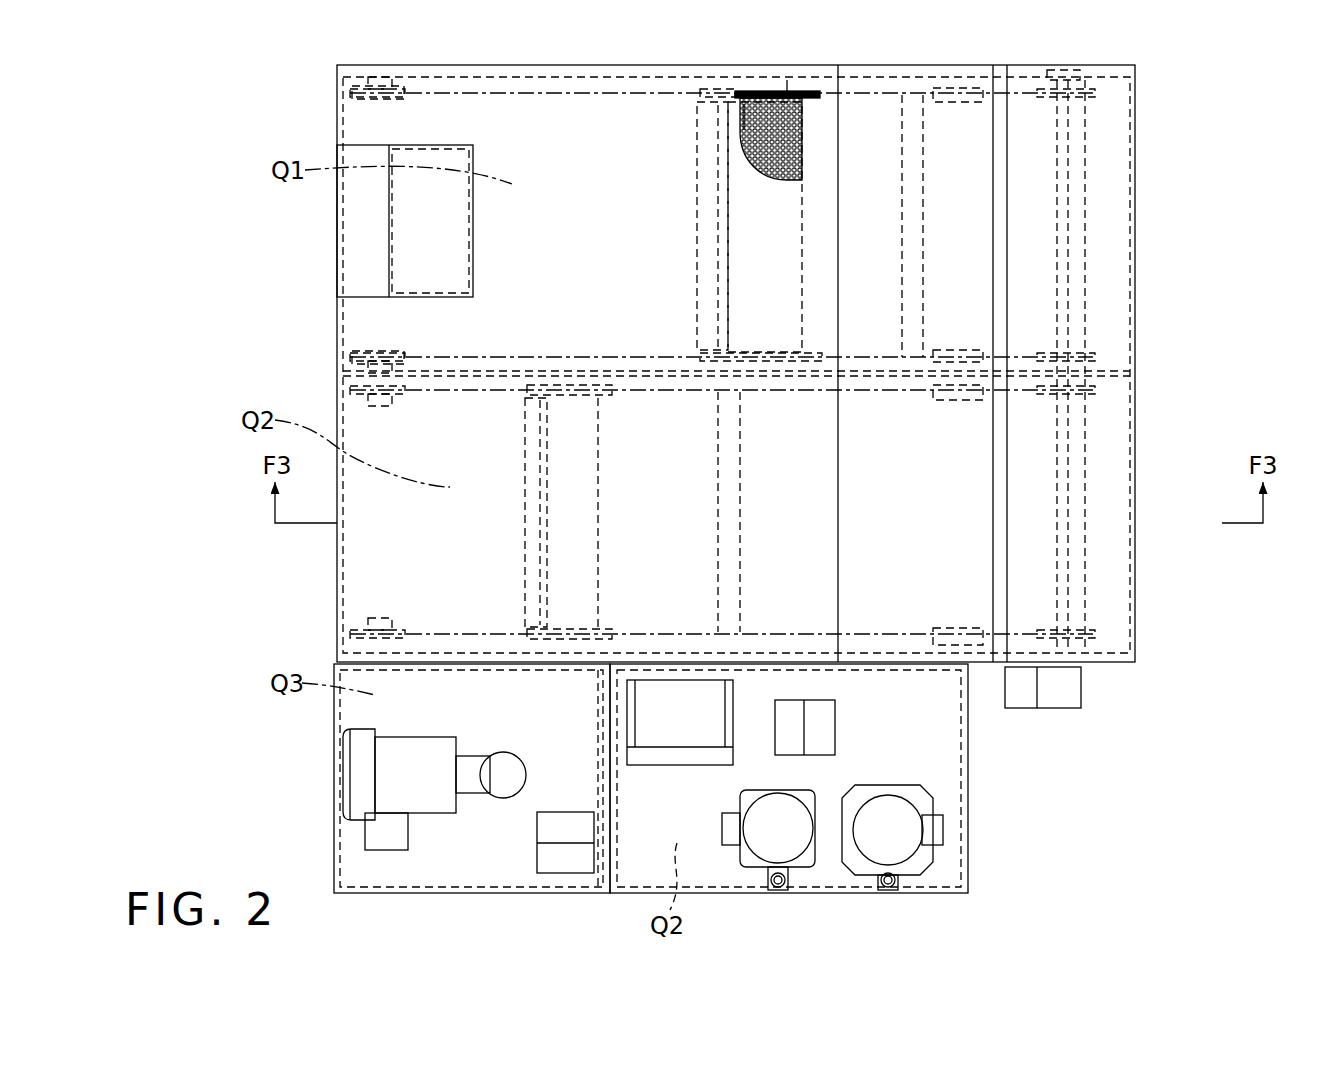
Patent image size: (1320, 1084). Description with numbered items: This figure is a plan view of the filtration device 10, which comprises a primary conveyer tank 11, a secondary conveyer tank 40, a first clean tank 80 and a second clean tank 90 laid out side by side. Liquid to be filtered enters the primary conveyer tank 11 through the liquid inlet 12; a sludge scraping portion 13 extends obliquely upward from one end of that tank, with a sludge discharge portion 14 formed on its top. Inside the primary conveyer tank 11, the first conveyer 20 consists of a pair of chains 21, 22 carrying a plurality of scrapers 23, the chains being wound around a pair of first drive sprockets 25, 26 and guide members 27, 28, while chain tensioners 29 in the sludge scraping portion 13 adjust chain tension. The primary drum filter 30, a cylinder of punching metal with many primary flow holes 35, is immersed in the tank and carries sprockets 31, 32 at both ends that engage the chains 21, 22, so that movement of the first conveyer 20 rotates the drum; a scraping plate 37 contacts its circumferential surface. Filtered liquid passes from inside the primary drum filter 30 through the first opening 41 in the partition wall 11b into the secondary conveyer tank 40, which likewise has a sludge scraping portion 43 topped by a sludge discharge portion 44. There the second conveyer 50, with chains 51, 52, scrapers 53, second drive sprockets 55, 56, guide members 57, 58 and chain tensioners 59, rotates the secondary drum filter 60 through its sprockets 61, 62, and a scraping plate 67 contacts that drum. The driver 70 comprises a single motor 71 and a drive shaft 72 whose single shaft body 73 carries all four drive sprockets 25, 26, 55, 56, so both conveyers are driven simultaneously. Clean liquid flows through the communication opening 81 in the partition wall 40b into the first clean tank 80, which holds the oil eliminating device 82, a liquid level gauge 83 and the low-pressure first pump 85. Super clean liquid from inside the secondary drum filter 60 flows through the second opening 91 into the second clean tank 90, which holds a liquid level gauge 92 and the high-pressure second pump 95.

The filtration device 10 is at (293, 309).
The primary conveyer tank 11 is at (360, 118).
The partition wall 11b is at (718, 392).
The liquid inlet 12 is at (362, 218).
The sludge scraping portion 13 is at (973, 207).
The sludge discharge portion 14 is at (1115, 200).
The first conveyer 20 is at (683, 276).
The chain 21 is at (628, 96).
The chain 22 is at (565, 356).
The scrapers 23 is at (920, 257).
The first drive sprocket 25 is at (1095, 96).
The first drive sprocket 26 is at (1095, 356).
The guide member 27 is at (392, 100).
The guide member 28 is at (392, 358).
The chain tensioners 29 is at (958, 103).
The primary drum filter 30 is at (800, 178).
The sprocket 31 is at (805, 96).
The sprocket 32 is at (803, 354).
The primary flow holes 35 is at (800, 158).
The scraping plate 37 is at (697, 210).
The secondary conveyer tank 40 is at (357, 543).
The partition wall 40b is at (783, 650).
The first opening 41 is at (745, 392).
The sludge scraping portion 43 is at (967, 495).
The sludge discharge portion 44 is at (1105, 530).
The second conveyer 50 is at (515, 591).
The chain 51 is at (875, 395).
The chain 52 is at (877, 628).
The scrapers 53 is at (740, 553).
The second drive sprocket 55 is at (1095, 392).
The second drive sprocket 56 is at (1093, 633).
The guide member 57 is at (380, 396).
The guide member 58 is at (390, 628).
The chain tensioners 59 is at (957, 400).
The secondary drum filter 60 is at (598, 507).
The sprocket 61 is at (605, 398).
The sprocket 62 is at (610, 628).
The scraping plate 67 is at (525, 513).
The driver 70 is at (1083, 723).
The motor 71 is at (1081, 695).
The drive shaft 72 is at (1093, 558).
The shaft body 73 is at (1065, 296).
The first clean tank 80 is at (962, 768).
The communication opening 81 is at (700, 650).
The oil eliminating device 82 is at (677, 733).
The liquid level gauge 83 is at (835, 725).
The first pump 85 is at (765, 838).
The second clean tank 90 is at (462, 858).
The second opening 91 is at (560, 655).
The liquid level gauge 92 is at (561, 812).
The second pump 95 is at (423, 745).